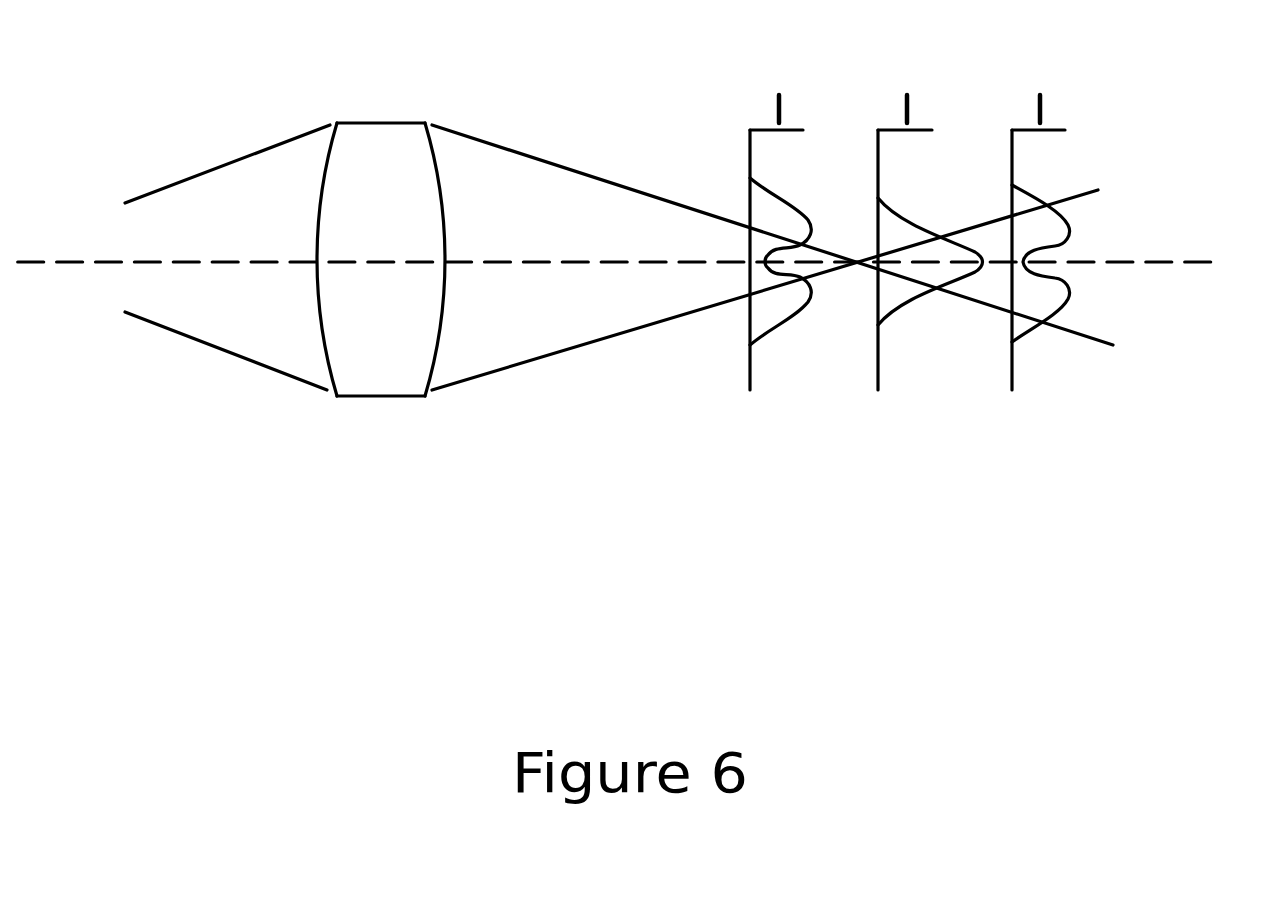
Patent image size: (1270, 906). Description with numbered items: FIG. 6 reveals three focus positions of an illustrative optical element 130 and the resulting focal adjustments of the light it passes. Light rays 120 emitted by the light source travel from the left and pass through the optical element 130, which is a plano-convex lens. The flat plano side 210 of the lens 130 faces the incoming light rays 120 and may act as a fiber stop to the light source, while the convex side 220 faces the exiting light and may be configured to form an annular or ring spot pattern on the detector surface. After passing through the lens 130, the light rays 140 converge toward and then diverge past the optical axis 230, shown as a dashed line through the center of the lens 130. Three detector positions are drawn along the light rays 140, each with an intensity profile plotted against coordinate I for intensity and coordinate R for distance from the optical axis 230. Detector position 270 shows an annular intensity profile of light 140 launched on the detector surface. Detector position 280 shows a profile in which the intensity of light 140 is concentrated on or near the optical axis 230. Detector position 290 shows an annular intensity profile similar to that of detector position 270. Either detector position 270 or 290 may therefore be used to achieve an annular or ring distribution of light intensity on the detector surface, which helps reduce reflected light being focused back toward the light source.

The light rays 120 is at (230, 163).
The optical element 130 is at (375, 226).
The light rays 140 is at (552, 165).
The plano side 210 is at (317, 288).
The convex side 220 is at (443, 288).
The optical axis 230 is at (1152, 260).
The detector position 270 is at (750, 129).
The detector position 280 is at (878, 129).
The detector position 290 is at (1012, 129).